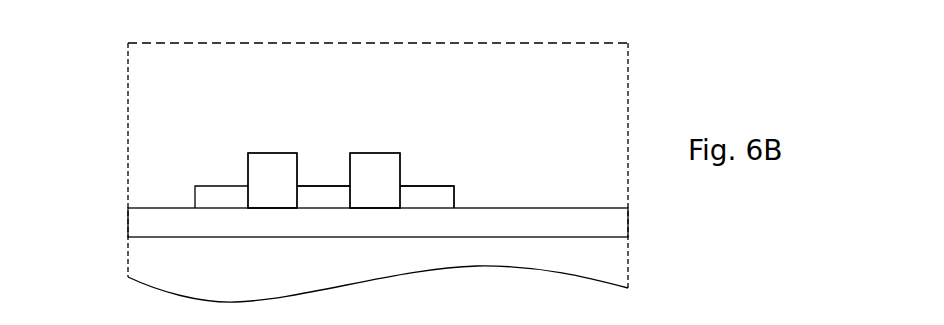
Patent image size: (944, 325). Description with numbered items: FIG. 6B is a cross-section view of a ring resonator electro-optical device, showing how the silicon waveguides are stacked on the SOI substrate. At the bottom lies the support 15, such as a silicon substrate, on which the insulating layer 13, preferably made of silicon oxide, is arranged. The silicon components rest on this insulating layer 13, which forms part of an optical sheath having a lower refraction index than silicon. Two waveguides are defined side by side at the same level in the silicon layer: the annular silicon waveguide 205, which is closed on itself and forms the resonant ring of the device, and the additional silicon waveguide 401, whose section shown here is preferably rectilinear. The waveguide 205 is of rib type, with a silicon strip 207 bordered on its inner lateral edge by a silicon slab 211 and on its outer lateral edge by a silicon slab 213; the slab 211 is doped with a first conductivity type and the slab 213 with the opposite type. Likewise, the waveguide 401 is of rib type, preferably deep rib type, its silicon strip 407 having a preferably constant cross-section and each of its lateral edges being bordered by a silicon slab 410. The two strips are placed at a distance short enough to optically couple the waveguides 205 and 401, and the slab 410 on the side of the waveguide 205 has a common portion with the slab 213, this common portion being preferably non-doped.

The insulating layer 13 is at (148, 222).
The support 15 is at (148, 257).
The silicon slab 410 is at (206, 187).
The silicon slab 213 is at (322, 187).
The silicon slab 211 is at (445, 187).
The silicon strip 407 is at (291, 188).
The silicon waveguide 401 is at (267, 129).
The silicon strip 207 is at (394, 188).
The annular silicon waveguide 205 is at (398, 131).